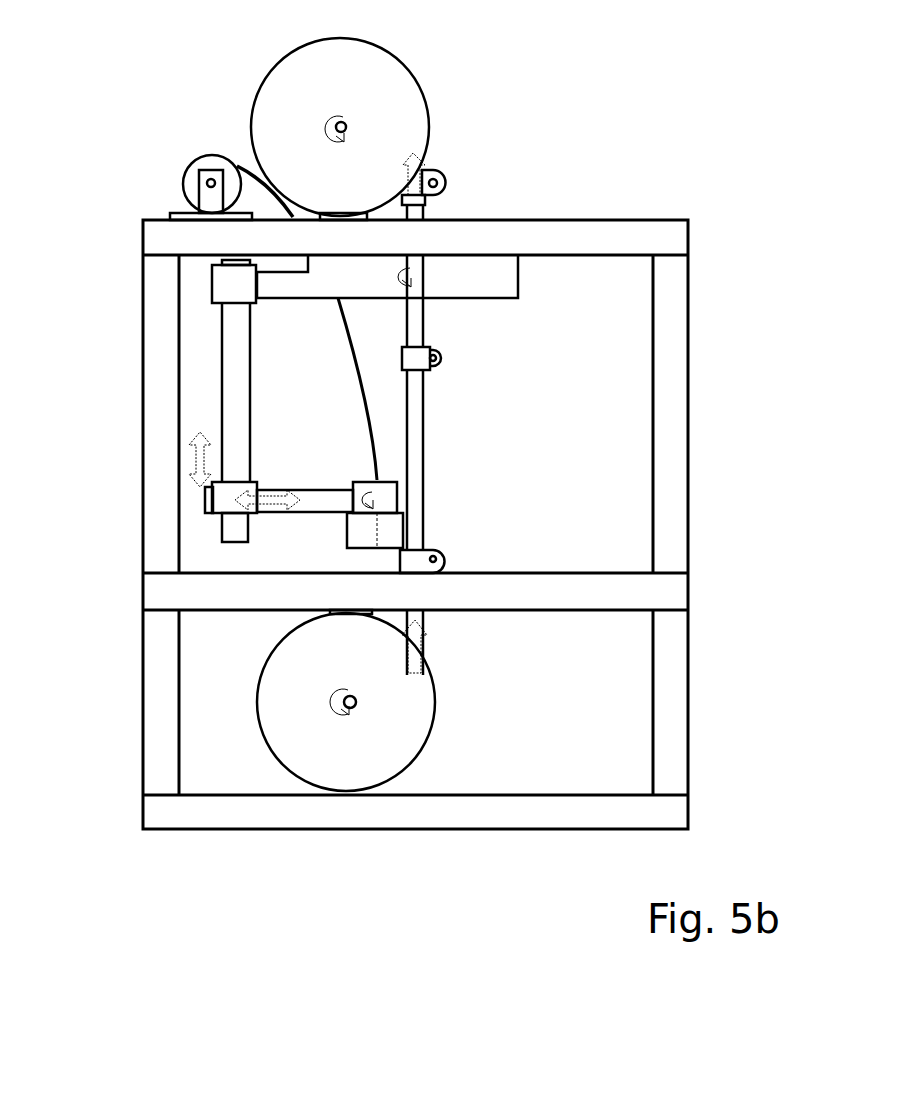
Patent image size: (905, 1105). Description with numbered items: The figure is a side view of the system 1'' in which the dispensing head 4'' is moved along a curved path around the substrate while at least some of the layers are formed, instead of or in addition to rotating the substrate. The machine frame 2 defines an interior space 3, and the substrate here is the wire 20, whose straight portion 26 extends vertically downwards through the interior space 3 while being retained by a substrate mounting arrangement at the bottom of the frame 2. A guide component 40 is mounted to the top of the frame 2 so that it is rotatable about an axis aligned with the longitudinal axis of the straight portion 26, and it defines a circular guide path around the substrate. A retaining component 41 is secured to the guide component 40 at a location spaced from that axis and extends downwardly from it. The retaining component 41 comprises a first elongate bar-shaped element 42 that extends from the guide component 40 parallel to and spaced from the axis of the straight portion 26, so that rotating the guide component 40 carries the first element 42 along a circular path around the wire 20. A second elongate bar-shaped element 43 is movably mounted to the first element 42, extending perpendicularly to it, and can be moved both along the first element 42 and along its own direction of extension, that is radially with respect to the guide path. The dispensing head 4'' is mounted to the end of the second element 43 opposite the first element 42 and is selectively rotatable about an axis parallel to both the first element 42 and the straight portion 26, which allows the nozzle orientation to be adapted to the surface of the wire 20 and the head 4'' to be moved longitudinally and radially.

The system 1'' is at (696, 126).
The machine frame 2 is at (675, 427).
The interior space 3 is at (594, 384).
The dispensing head 4'' is at (341, 537).
The wire 20 is at (451, 458).
The straight portion 26 is at (417, 410).
The guide component 40 is at (487, 273).
The retaining component 41 is at (192, 413).
The first elongate bar-shaped element 42 is at (235, 362).
The second elongate bar-shaped element 43 is at (322, 497).